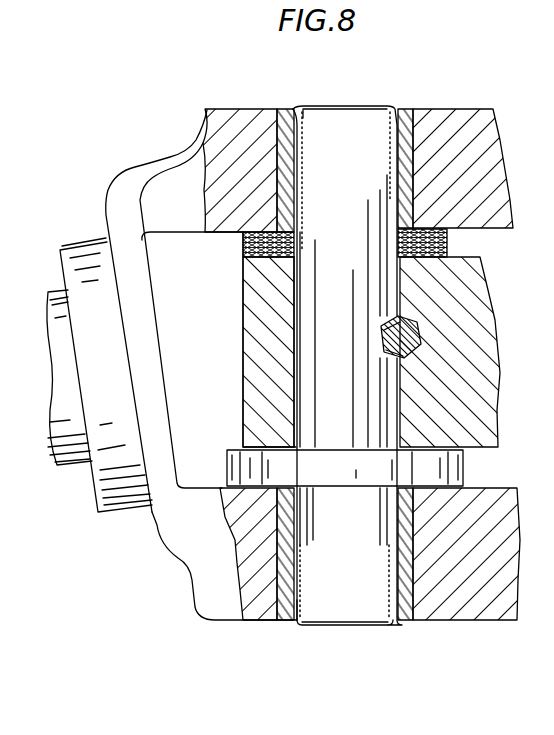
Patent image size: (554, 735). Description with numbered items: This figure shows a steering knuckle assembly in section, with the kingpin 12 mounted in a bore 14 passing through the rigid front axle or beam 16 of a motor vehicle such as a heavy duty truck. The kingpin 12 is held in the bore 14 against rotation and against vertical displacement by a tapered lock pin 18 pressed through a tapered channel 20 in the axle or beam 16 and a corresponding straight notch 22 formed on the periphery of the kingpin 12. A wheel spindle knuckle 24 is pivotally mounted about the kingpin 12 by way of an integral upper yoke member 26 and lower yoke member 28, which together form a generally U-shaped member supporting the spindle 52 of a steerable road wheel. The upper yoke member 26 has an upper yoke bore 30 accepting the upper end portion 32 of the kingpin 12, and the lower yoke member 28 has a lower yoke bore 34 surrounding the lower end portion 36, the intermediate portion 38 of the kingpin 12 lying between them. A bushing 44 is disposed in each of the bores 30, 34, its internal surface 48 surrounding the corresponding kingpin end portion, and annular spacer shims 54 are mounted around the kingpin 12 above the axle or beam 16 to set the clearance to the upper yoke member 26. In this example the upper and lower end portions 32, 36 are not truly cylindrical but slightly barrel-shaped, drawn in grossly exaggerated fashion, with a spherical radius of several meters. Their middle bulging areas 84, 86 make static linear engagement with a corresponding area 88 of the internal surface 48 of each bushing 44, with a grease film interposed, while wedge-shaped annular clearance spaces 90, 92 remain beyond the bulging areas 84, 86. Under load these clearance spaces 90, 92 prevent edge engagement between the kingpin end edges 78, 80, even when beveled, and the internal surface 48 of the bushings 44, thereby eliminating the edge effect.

The kingpin 12 is at (289, 371).
The bore 14 is at (302, 403).
The front axle or beam 16 is at (482, 382).
The tapered lock pin 18 is at (385, 353).
The tapered channel 20 is at (418, 342).
The straight notch 22 is at (385, 338).
The wheel spindle knuckle 24 is at (165, 150).
The upper yoke member 26 is at (224, 113).
The lower yoke member 28 is at (231, 610).
The upper yoke bore 30 is at (280, 207).
The upper end portion of the kingpin 32 is at (320, 122).
The lower yoke bore 34 is at (290, 512).
The lower end portion of the kingpin 36 is at (327, 613).
The intermediate portion of the kingpin 38 is at (313, 311).
The bushing 44 is at (422, 170).
The internal surface of the bushing 48 is at (393, 208).
The spindle 52 is at (73, 465).
The annular spacer shims 54 is at (450, 244).
The kingpin upper end portion edge 78 is at (350, 104).
The kingpin lower end portion edge 80 is at (358, 624).
The bulging area of the kingpin upper end portion 84 is at (293, 167).
The bulging area of the kingpin lower end portion 86 is at (297, 548).
The engagement area of the bushing internal surface 88 is at (307, 170).
The wedge-shaped annular clearance space 90 is at (413, 107).
The wedge-shaped annular clearance space 92 is at (410, 620).